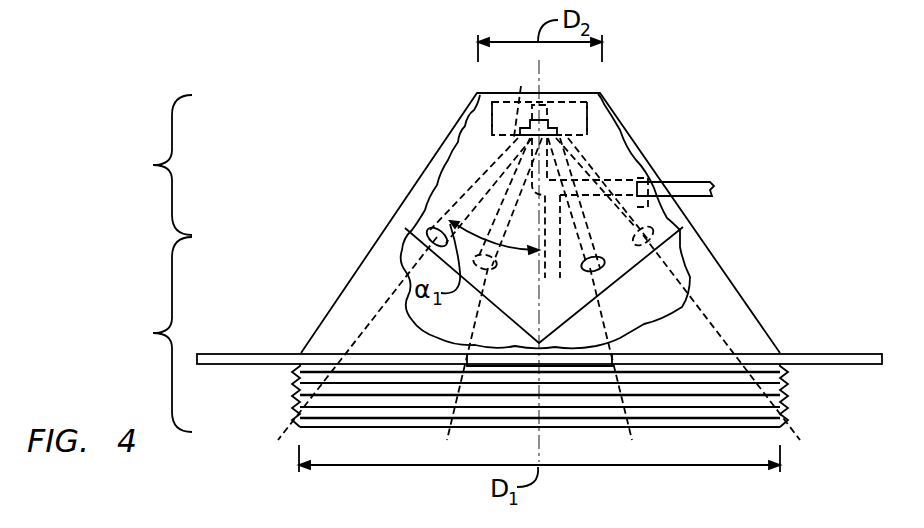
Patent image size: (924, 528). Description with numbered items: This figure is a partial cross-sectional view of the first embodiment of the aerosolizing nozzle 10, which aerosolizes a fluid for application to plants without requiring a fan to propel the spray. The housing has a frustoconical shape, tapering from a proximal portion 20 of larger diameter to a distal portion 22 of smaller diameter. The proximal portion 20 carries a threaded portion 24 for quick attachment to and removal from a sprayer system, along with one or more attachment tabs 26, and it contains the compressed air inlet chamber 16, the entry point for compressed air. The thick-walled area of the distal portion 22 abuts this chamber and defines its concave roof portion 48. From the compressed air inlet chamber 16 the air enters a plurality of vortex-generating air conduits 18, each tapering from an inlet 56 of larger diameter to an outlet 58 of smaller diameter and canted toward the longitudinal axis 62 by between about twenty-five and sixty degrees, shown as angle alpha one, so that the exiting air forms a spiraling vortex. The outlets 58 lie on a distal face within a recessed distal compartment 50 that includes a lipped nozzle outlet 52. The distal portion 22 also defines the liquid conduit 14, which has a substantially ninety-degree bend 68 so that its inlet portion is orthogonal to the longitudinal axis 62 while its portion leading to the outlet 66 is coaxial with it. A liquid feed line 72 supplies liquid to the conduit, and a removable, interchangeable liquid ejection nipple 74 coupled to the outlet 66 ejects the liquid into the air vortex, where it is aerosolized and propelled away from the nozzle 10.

The aerosolizing nozzle 10 is at (727, 94).
The liquid conduit 14 is at (508, 144).
The compressed air inlet chamber 16 is at (655, 272).
The vortex-generating air conduits 18 is at (455, 178).
The proximal portion 20 is at (153, 333).
The distal portion 22 is at (153, 165).
The threaded portion 24 is at (685, 410).
The attachment tabs 26 is at (828, 354).
The concave roof portion 48 is at (402, 266).
The distal compartment 50 is at (502, 118).
The lipped nozzle outlet 52 is at (562, 67).
The inlet 56 is at (428, 229).
The outlet 58 is at (521, 86).
The longitudinal axis 62 is at (541, 450).
The outlet 66 is at (568, 113).
The bend 68 is at (584, 224).
The liquid feed line 72 is at (685, 182).
The liquid ejection nipple 74 is at (560, 112).